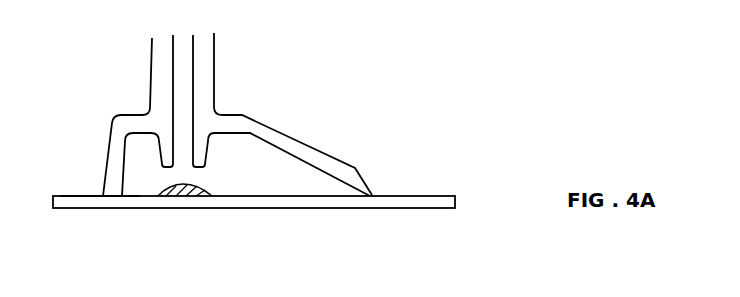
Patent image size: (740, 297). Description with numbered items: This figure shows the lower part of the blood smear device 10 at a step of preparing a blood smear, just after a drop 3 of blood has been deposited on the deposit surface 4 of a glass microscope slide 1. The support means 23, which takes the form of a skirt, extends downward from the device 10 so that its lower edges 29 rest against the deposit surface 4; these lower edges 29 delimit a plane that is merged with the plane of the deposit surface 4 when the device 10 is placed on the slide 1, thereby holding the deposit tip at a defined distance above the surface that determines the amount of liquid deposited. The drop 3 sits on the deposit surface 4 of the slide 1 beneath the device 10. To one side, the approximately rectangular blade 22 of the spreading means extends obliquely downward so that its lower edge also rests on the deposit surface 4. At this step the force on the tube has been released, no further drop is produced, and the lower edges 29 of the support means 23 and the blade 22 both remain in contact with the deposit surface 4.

The substrate / circuit board 1 is at (68, 209).
The drop 3 is at (202, 186).
The deposit surface 4 is at (85, 195).
The device 10 is at (238, 43).
The blade 22 is at (320, 130).
The support means 23 is at (112, 113).
The lower edges 29 is at (108, 197).